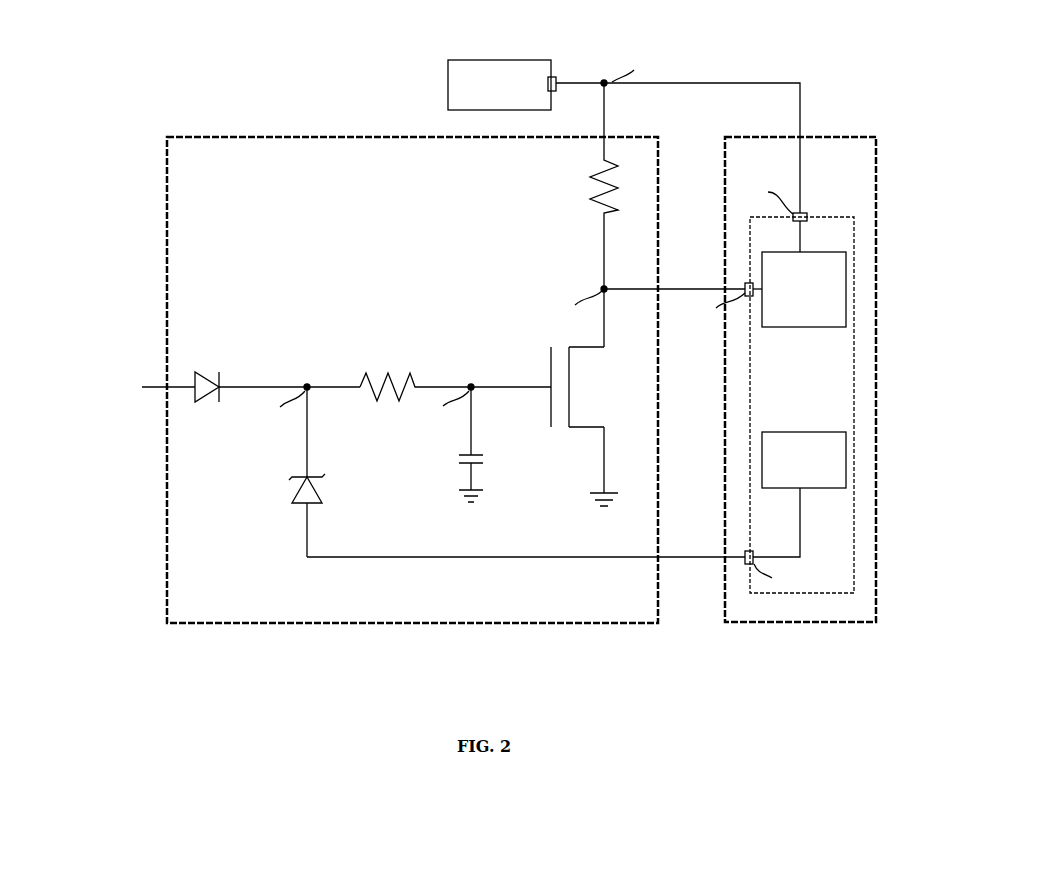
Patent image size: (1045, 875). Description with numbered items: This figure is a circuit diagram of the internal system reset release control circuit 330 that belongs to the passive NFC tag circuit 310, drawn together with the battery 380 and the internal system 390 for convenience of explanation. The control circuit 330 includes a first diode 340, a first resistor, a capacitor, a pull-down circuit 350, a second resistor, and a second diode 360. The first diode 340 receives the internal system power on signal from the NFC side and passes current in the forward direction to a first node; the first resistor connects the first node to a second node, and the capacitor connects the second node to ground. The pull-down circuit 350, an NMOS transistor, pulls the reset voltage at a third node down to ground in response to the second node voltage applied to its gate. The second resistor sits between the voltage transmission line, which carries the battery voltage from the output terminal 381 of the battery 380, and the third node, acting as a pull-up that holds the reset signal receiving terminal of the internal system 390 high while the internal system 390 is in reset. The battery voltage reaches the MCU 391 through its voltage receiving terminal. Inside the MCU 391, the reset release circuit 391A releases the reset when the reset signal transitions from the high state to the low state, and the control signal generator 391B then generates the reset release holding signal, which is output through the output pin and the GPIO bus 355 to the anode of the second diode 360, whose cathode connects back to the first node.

The passive NFC tag circuit 310 is at (158, 60).
The internal system reset release control circuit 330 is at (248, 136).
The first diode 340 is at (206, 373).
The pull-down circuit 350 is at (570, 387).
The GPIO bus 355 is at (668, 557).
The second diode 360 is at (321, 492).
The battery 380 is at (488, 60).
The output terminal 381 is at (556, 78).
The internal system 390 is at (850, 136).
The MCU 391 is at (834, 216).
The reset release circuit 391A is at (846, 288).
The control signal generator 391B is at (846, 461).